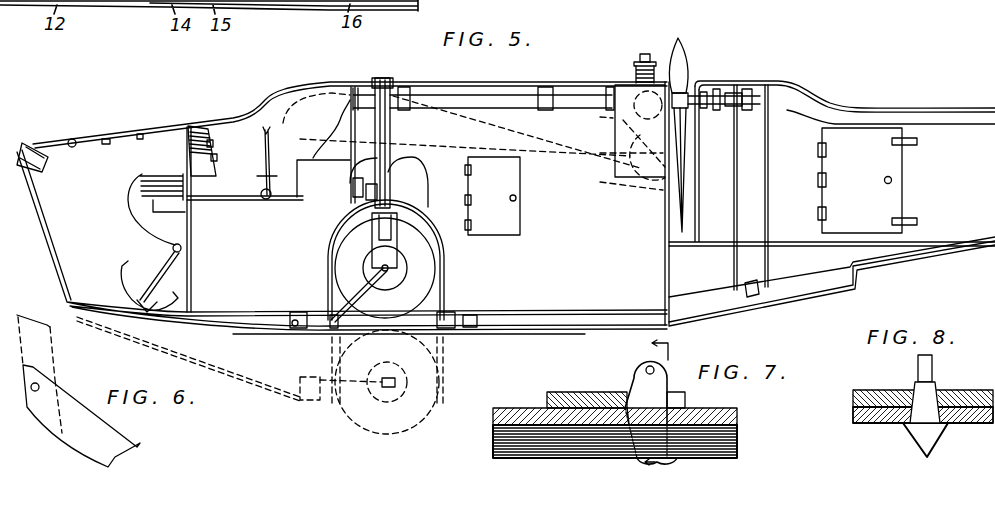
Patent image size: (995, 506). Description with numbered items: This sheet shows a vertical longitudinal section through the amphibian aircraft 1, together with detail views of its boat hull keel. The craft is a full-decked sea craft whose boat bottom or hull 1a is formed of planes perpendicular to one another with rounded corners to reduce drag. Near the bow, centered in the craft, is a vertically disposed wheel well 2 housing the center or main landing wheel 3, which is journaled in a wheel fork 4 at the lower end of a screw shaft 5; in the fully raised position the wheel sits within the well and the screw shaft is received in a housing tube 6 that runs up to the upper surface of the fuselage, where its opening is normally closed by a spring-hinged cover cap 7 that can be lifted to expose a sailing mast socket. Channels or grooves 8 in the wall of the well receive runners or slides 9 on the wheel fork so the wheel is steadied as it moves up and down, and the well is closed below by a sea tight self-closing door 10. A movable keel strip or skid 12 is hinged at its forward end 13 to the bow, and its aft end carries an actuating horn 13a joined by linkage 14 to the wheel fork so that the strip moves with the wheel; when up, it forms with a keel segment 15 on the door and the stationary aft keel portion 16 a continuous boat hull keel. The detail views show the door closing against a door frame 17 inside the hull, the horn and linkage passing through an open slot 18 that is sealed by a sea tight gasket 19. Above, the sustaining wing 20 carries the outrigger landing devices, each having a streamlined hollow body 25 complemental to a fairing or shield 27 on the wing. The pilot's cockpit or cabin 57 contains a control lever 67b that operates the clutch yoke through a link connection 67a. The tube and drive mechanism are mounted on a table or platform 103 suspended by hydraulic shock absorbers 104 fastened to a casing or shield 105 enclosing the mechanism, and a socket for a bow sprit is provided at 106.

In FIG. 5, the amphibian aircraft 1 is at (782, 82).
In FIG. 5, the boat bottom or hull 1a is at (304, 324).
In FIG. 7, the boat bottom or hull 1a is at (493, 414).
In FIG. 8, the boat bottom or hull 1a is at (880, 420).
In FIG. 5, the wheel well 2 is at (445, 281).
In FIG. 5, the center or main landing wheel 3 is at (427, 257).
In FIG. 6, the center or main landing wheel 3 is at (353, 417).
In FIG. 5, the wheel fork 4 is at (370, 233).
In FIG. 5, the screw shaft 5 is at (390, 137).
In FIG. 5, the housing tube 6 is at (350, 120).
In FIG. 5, the spring-hinged cover cap 7 is at (378, 78).
In FIG. 5, the channels or grooves 8 is at (388, 314).
In FIG. 7, the channels or grooves 8 is at (650, 404).
In FIG. 5, the runners or slides 9 is at (372, 248).
In FIG. 5, the sea tight self-closing door 10 is at (437, 330).
In FIG. 7, the sea tight self-closing door 10 is at (738, 409).
In FIG. 5, the movable keel strip or skid 12 is at (240, 330).
In FIG. 6, the movable keel strip or skid 12 is at (107, 435).
In FIG. 7, the movable keel strip or skid 12 is at (493, 440).
In FIG. 8, the movable keel strip or skid 12 is at (948, 437).
In FIG. 5, the forward end of keel strip 13 is at (67, 303).
In FIG. 6, the forward end of keel strip 13 is at (58, 380).
In FIG. 6, the actuating horn 13a is at (312, 400).
In FIG. 7, the actuating horn 13a is at (635, 385).
In FIG. 8, the actuating horn 13a is at (941, 391).
In FIG. 5, the linkage 14 is at (353, 285).
In FIG. 6, the linkage 14 is at (320, 378).
In FIG. 5, the keel segment 15 is at (413, 335).
In FIG. 7, the keel segment 15 is at (738, 440).
In FIG. 5, the stationary aft keel portion 16 is at (549, 326).
In FIG. 5, the door frame 17 is at (293, 313).
In FIG. 7, the door frame 17 is at (552, 393).
In FIG. 8, the door frame 17 is at (882, 392).
In FIG. 7, the open slot 18 is at (667, 397).
In FIG. 7, the sea tight gasket 19 is at (620, 392).
In FIG. 8, the sea tight gasket 19 is at (916, 381).
In FIG. 5, the sustaining wing 20 is at (486, 110).
In FIG. 5, the streamlined hollow body 25 is at (615, 182).
In FIG. 5, the fairing or shield 27 is at (607, 82).
In FIG. 5, the pilot's cockpit or cabin 57 is at (246, 197).
In FIG. 5, the link connection 67a is at (258, 176).
In FIG. 5, the control lever 67b is at (270, 156).
In FIG. 5, the table or platform 103 is at (352, 213).
In FIG. 5, the hydraulic shock absorbers 104 is at (351, 185).
In FIG. 5, the casing or shield 105 is at (415, 180).
In FIG. 5, the bow sprit socket 106 is at (32, 143).